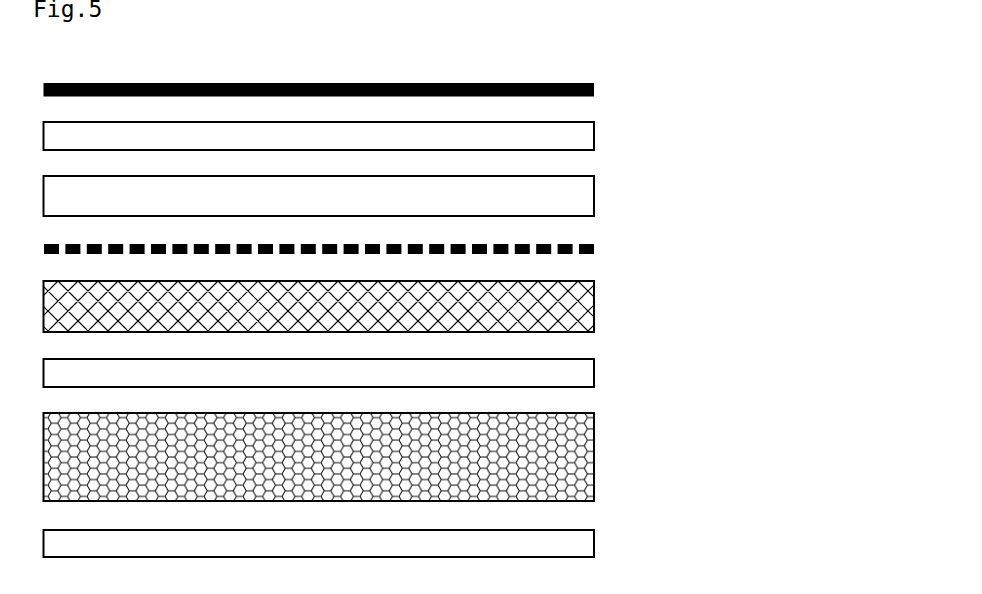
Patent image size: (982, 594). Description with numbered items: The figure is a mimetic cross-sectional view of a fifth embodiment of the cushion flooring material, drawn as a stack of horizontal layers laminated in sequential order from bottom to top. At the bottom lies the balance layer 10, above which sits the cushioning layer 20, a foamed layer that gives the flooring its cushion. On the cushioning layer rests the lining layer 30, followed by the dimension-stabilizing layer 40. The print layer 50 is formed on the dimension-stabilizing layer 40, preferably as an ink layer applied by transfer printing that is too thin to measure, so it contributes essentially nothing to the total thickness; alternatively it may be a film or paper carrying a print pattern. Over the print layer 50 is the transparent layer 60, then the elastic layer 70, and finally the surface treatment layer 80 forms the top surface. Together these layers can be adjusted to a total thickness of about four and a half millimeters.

The balance layer 10 is at (594, 540).
The cushioning layer 20 is at (594, 449).
The lining layer 30 is at (594, 371).
The dimension-stabilizing layer 40 is at (594, 305).
The print layer 50 is at (594, 249).
The transparent layer 60 is at (594, 195).
The elastic layer 70 is at (594, 136).
The surface treatment layer 80 is at (594, 90).